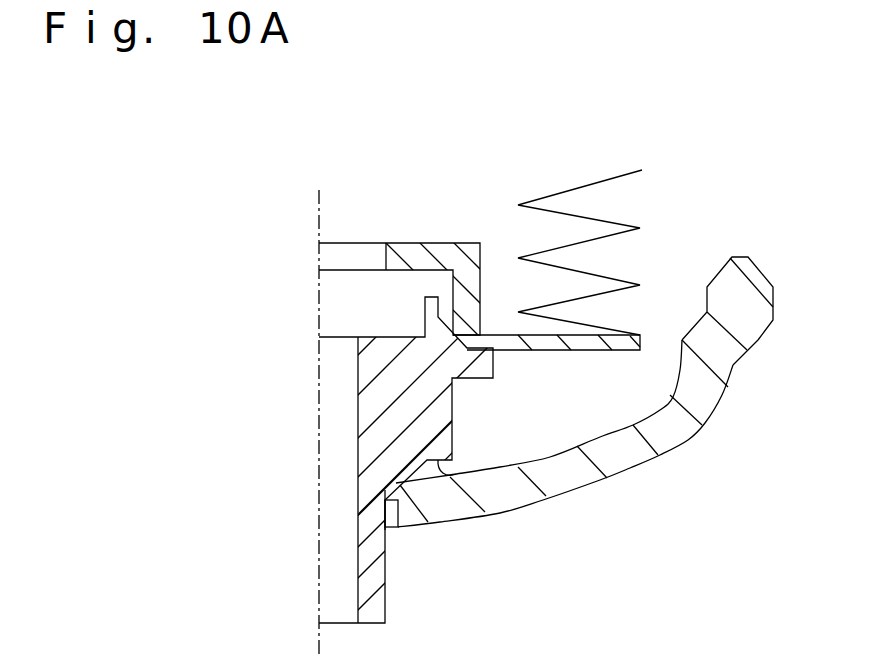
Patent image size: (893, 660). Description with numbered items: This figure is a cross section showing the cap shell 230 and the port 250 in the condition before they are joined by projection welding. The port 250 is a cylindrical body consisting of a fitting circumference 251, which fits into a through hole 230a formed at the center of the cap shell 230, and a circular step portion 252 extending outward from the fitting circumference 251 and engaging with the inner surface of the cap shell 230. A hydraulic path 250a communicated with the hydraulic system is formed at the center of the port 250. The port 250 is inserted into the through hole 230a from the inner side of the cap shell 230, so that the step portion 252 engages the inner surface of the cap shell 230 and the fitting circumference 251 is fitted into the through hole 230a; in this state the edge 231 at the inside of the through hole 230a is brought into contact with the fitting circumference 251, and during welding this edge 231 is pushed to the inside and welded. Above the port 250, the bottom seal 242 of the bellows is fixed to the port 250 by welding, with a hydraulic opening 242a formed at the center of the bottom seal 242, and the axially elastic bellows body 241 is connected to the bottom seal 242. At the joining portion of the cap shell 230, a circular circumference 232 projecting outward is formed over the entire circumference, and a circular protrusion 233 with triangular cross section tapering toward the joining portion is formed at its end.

The cap shell 230 is at (627, 472).
The through hole 230a is at (390, 515).
The edge 231 is at (384, 503).
The circular circumference 232 is at (758, 340).
The circular protrusion 233 is at (716, 273).
The bellows body 241 is at (558, 188).
The bottom seal 242 is at (429, 243).
The hydraulic opening 242a is at (347, 257).
The port 250 is at (390, 583).
The hydraulic path 250a is at (340, 378).
The fitting circumference 251 is at (418, 474).
The step portion 252 is at (456, 474).